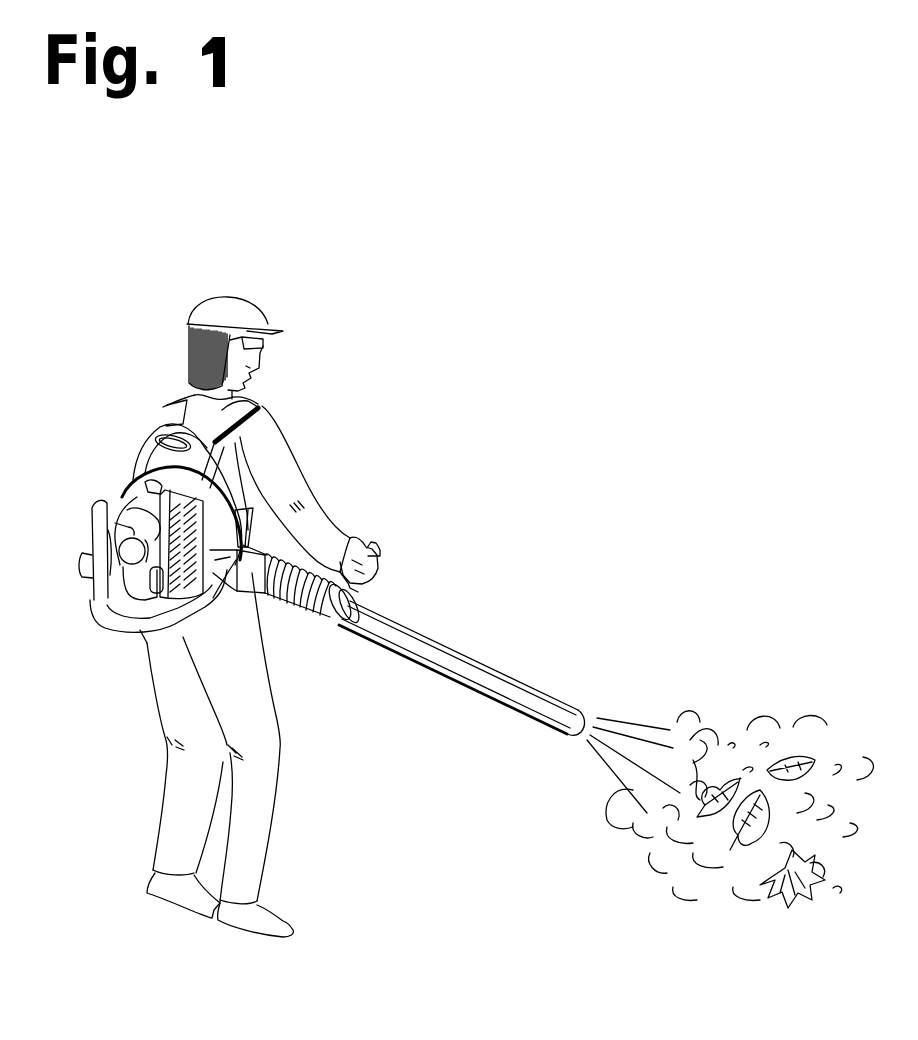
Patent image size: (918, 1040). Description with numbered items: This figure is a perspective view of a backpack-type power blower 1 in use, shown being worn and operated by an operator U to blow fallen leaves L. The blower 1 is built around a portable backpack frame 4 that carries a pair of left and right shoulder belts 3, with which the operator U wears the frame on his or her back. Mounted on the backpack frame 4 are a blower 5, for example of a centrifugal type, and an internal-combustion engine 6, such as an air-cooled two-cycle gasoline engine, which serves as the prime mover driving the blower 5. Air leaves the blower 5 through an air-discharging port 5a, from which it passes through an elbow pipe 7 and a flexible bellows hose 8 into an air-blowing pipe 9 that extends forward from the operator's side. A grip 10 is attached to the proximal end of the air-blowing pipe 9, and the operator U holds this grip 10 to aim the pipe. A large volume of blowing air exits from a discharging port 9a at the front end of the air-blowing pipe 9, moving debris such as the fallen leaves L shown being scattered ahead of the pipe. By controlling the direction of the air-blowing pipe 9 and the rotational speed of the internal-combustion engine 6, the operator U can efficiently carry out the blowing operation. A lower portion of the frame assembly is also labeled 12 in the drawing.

The backpack-type power blower 1 is at (98, 433).
The shoulder belts 3 is at (177, 407).
The backpack frame 4 is at (133, 457).
The blower 5 is at (197, 472).
The air-discharging port 5a is at (242, 600).
The internal-combustion engine 6 is at (138, 501).
The elbow pipe 7 is at (257, 578).
The bellows hose 8 is at (305, 600).
The air-blowing pipe 9 is at (443, 645).
The discharging port 9a is at (580, 736).
The grip 10 is at (383, 555).
The lower frame 12 is at (172, 636).
The operator U is at (292, 462).
The fallen leaves L is at (780, 910).